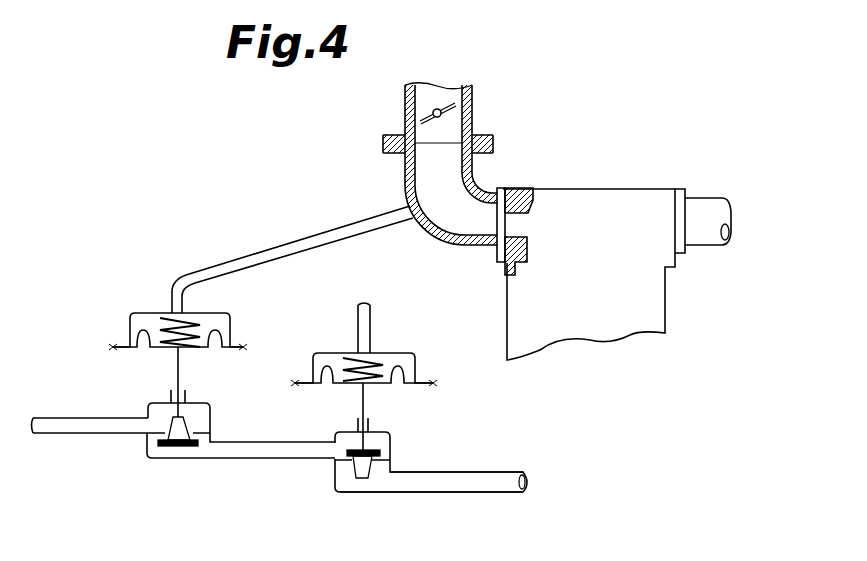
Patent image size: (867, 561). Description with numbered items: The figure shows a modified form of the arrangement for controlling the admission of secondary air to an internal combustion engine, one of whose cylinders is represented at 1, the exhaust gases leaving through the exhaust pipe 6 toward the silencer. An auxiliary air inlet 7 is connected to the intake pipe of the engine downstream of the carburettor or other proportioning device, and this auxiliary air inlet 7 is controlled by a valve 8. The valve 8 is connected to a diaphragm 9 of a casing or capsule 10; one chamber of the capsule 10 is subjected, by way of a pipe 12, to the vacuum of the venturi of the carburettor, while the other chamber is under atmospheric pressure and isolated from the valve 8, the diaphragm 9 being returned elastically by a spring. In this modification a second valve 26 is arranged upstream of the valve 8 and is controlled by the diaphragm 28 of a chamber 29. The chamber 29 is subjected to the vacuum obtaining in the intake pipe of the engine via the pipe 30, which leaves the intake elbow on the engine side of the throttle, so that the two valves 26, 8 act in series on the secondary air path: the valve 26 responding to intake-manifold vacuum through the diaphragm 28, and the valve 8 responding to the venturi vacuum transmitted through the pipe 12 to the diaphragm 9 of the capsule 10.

The cylinder 1 is at (592, 205).
The exhaust pipe 6 is at (697, 210).
The auxiliary air inlet 7 is at (460, 480).
The valve 8 is at (362, 470).
The diaphragm 9 is at (392, 385).
The casing or capsule 10 is at (416, 360).
The pipe 12 is at (372, 327).
The valve 26 is at (180, 446).
The diaphragm 28 is at (150, 348).
The chamber 29 is at (135, 312).
The pipe 30 is at (248, 262).